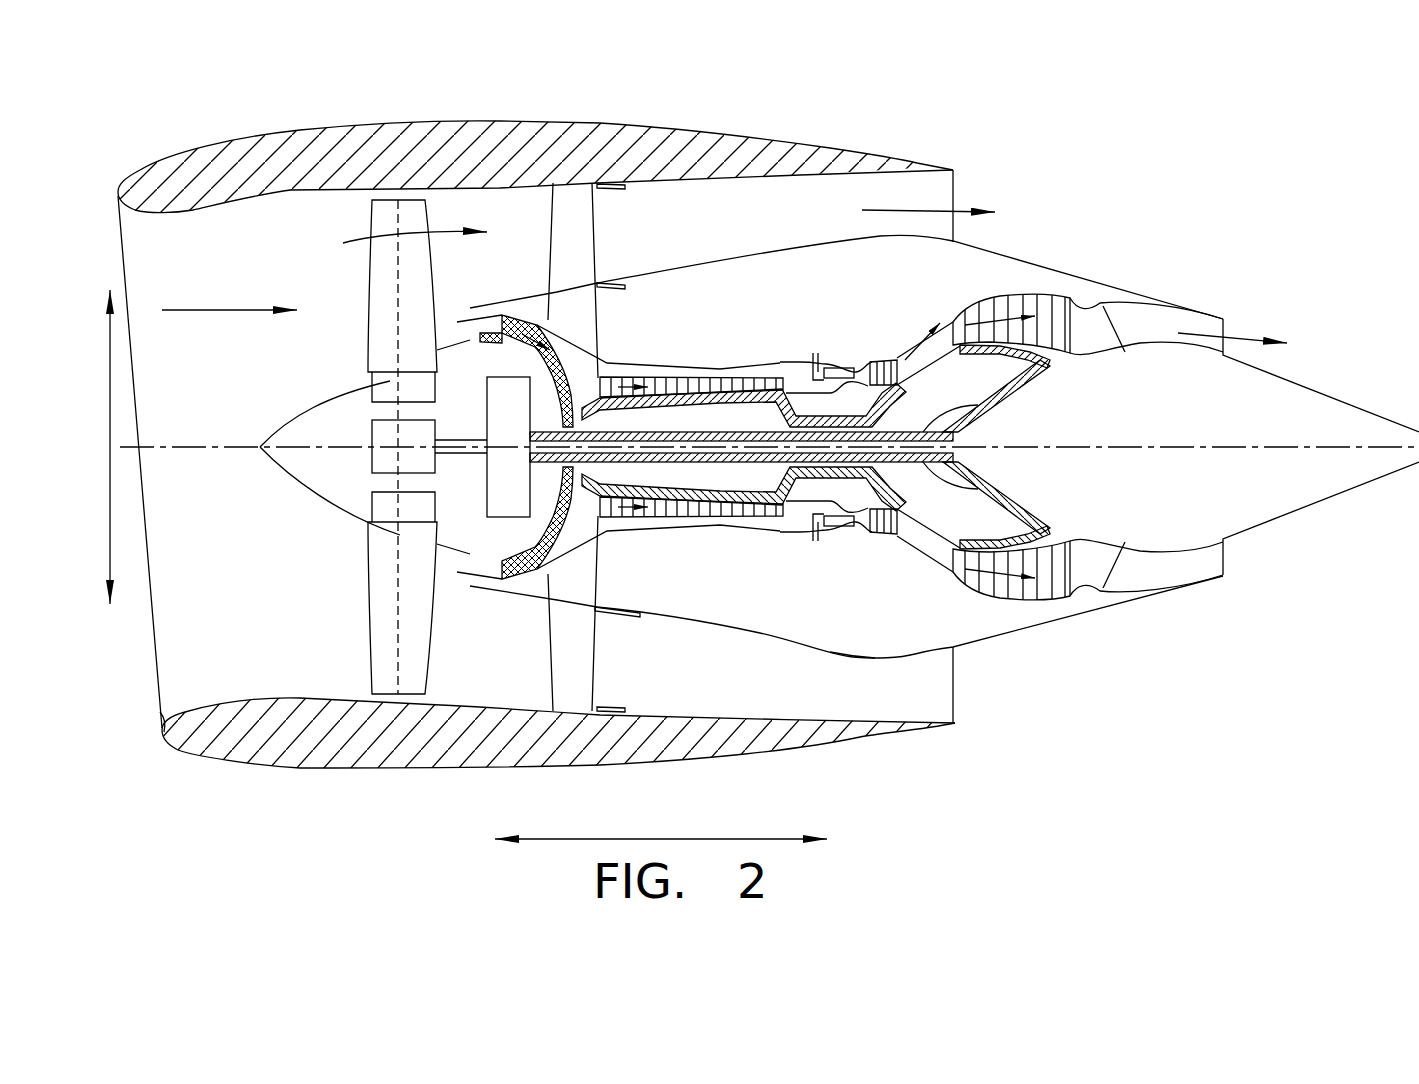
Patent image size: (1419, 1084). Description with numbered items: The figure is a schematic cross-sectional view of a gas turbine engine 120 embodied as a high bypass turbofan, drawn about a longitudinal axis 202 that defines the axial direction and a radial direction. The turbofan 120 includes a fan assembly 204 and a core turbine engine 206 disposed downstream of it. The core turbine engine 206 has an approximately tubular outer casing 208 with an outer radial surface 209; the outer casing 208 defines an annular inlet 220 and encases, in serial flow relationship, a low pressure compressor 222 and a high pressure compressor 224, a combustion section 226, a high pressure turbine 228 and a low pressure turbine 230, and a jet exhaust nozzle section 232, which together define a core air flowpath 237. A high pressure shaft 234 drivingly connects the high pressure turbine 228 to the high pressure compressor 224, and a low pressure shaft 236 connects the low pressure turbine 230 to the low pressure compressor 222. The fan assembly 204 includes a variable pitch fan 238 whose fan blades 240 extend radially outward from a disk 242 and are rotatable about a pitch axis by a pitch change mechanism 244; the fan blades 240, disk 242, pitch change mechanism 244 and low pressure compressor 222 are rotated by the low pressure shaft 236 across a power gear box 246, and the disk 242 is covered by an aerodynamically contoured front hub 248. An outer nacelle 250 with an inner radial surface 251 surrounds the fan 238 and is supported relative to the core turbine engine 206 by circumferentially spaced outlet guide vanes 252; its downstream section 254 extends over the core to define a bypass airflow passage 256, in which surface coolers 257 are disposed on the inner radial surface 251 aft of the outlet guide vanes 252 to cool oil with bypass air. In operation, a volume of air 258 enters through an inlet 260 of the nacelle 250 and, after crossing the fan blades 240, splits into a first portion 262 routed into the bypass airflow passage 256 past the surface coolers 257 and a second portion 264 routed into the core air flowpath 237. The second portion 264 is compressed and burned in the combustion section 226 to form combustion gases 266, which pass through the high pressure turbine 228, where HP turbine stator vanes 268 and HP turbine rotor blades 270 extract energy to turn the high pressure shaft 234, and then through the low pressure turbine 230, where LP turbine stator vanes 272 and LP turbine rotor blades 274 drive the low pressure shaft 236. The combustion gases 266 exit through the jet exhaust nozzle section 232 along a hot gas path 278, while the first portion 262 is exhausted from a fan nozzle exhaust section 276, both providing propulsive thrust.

The gas turbine engine 120 is at (1125, 157).
The longitudinal axis 202 is at (1157, 447).
The fan assembly 204 is at (531, 173).
The core turbine engine 206 is at (773, 338).
The outer casing 208 is at (807, 640).
The outer radial surface 209 is at (853, 657).
The annular inlet 220 is at (483, 575).
The low pressure compressor 222 is at (533, 575).
The high pressure compressor 224 is at (633, 520).
The combustion section 226 is at (833, 523).
The high pressure turbine 228 is at (908, 530).
The low pressure turbine 230 is at (1053, 600).
The jet exhaust nozzle section 232 is at (1120, 578).
The high pressure shaft 234 is at (887, 408).
The low pressure shaft 236 is at (947, 413).
The core air flowpath 237 is at (570, 537).
The variable pitch fan 238 is at (293, 465).
The fan blades 240 is at (370, 627).
The disk 242 is at (390, 387).
The pitch change mechanism 244 is at (370, 433).
The power gear box 246 is at (518, 392).
The front hub 248 is at (277, 467).
The outer nacelle 250 is at (422, 768).
The inner radial surface 251 is at (780, 173).
The outlet guide vanes 252 is at (597, 230).
The downstream section 254 is at (840, 143).
The bypass airflow passage 256 is at (757, 218).
The surface coolers 257 is at (620, 185).
The volume of air 258 is at (223, 310).
The inlet 260 is at (150, 710).
The first portion of air 262 is at (385, 238).
The second portion of air 264 is at (455, 320).
The combustion gases 266 is at (887, 358).
The HP turbine stator vanes 268 is at (857, 533).
The HP turbine rotor blades 270 is at (880, 505).
The LP turbine stator vanes 272 is at (963, 587).
The LP turbine rotor blades 274 is at (977, 593).
The fan nozzle exhaust section 276 is at (938, 188).
The hot gas path 278 is at (940, 323).